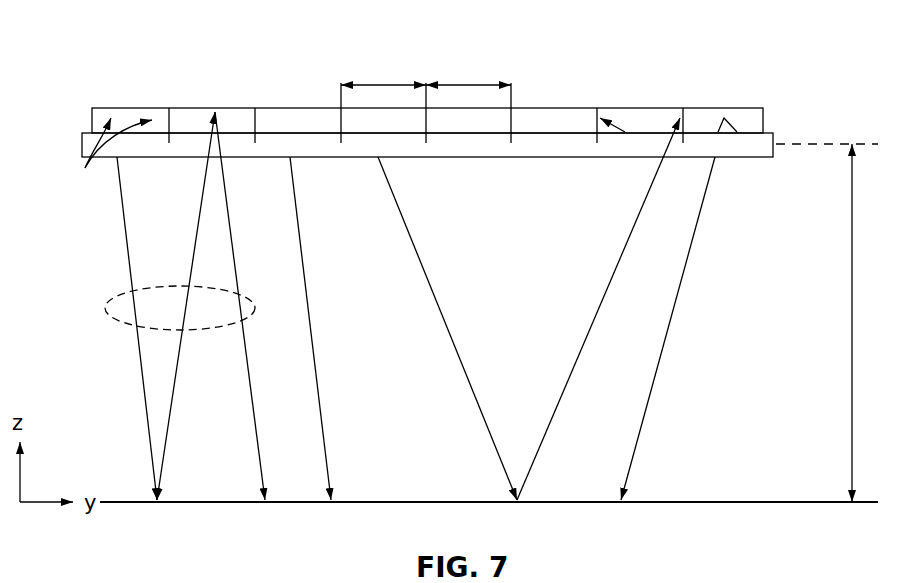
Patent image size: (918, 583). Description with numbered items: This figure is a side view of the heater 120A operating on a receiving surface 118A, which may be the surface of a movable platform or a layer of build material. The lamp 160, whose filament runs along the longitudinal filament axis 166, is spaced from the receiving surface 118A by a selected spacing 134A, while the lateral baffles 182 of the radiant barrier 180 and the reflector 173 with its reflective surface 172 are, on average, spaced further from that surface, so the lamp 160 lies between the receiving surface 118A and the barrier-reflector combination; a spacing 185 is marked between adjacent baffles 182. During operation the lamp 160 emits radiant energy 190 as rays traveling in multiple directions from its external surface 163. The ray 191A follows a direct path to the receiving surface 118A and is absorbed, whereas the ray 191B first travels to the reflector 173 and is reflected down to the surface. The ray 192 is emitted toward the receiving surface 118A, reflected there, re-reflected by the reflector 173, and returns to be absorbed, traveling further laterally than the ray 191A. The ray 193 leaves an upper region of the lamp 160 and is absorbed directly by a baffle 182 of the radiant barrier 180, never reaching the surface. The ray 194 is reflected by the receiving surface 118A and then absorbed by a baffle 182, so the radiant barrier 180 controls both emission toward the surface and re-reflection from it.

The heater 120A is at (389, 136).
The lamp 160 is at (304, 138).
The cylindrical external surface 163 is at (320, 149).
The reflective surface 172 is at (112, 309).
The member reflector 173 is at (128, 108).
The lateral baffle 182 is at (512, 120).
The facet pitch 185 is at (384, 84).
The radiant barrier 180 is at (683, 142).
The ray 193 is at (620, 125).
The longitudinal filament axis 166 is at (874, 145).
The radiant energy 190 is at (104, 270).
The ray 192 is at (117, 320).
The ray 191A is at (320, 405).
The ray 191B is at (690, 255).
The ray 194 is at (422, 260).
The selected spacing 134A is at (842, 323).
The receiving surface 118A is at (125, 500).